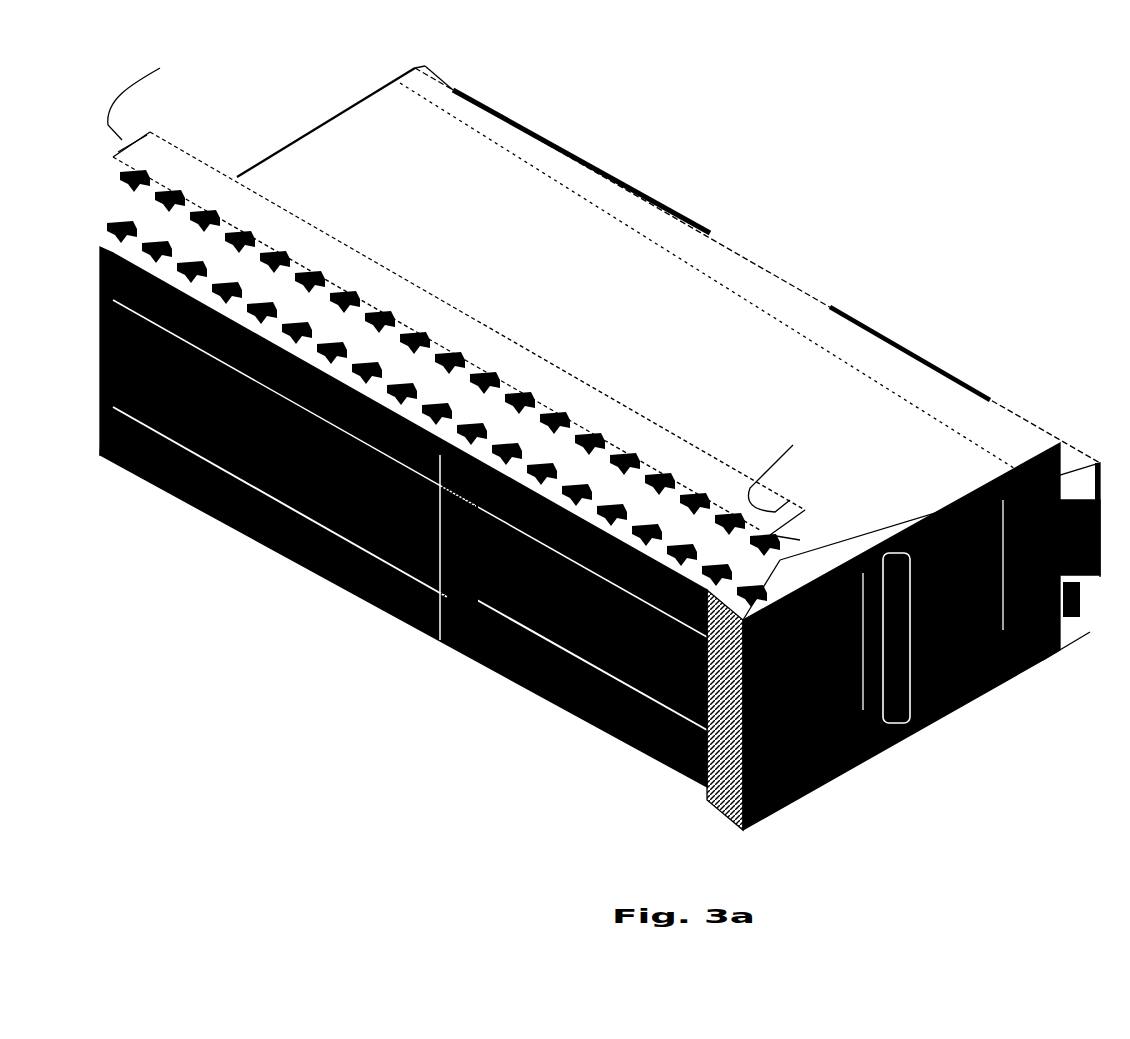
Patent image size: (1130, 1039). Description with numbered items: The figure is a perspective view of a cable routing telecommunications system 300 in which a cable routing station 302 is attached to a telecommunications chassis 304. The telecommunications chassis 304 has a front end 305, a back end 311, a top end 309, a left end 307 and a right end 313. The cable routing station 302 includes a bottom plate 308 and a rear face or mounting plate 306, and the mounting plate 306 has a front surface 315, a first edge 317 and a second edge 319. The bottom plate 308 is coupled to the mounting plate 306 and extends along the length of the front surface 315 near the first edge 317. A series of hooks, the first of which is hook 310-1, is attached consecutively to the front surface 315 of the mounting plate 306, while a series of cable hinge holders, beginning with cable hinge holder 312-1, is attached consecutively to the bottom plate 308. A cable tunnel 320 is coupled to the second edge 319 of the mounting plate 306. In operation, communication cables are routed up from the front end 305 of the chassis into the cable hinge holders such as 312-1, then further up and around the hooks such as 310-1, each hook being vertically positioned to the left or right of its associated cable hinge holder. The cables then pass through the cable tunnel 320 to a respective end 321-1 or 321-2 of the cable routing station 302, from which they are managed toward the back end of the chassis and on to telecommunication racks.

The cable routing telecommunications system 300 is at (684, 182).
The cable routing station 302 is at (240, 198).
The telecommunications chassis 304 is at (467, 527).
The front end 305 is at (437, 513).
The mounting plate 306 is at (780, 557).
The left end 307 is at (338, 113).
The bottom plate 308 is at (770, 553).
The top end 309 is at (743, 365).
The hook 310-1 is at (190, 233).
The back end 311 is at (992, 393).
The cable hinge holder 312-1 is at (131, 245).
The right end 313 is at (900, 745).
The front surface 315 is at (760, 563).
The first edge 317 is at (819, 790).
The second edge 319 is at (800, 510).
The cable tunnel 320 is at (727, 480).
The end of cable routing station 321-1 is at (170, 62).
The end of cable routing station 321-2 is at (793, 445).